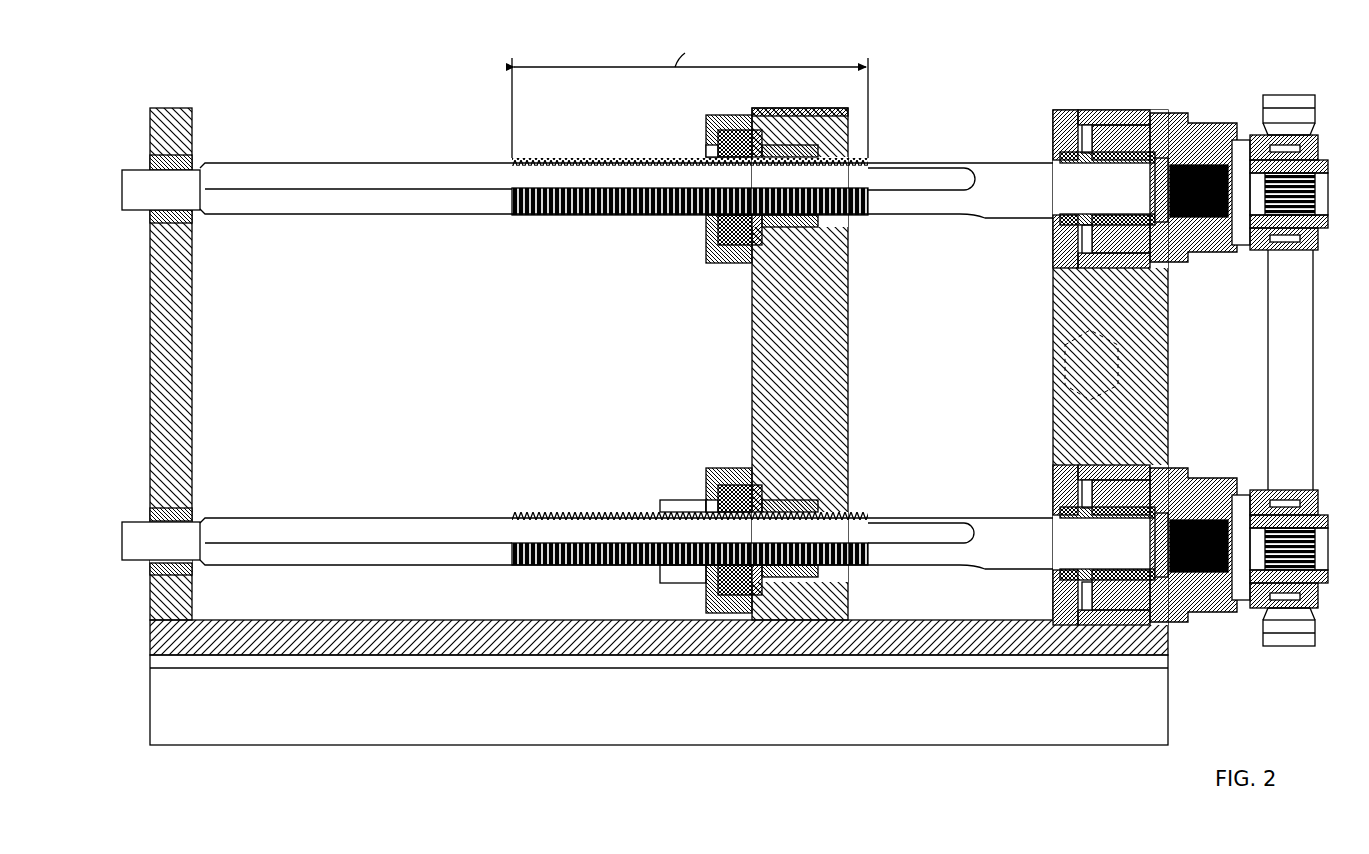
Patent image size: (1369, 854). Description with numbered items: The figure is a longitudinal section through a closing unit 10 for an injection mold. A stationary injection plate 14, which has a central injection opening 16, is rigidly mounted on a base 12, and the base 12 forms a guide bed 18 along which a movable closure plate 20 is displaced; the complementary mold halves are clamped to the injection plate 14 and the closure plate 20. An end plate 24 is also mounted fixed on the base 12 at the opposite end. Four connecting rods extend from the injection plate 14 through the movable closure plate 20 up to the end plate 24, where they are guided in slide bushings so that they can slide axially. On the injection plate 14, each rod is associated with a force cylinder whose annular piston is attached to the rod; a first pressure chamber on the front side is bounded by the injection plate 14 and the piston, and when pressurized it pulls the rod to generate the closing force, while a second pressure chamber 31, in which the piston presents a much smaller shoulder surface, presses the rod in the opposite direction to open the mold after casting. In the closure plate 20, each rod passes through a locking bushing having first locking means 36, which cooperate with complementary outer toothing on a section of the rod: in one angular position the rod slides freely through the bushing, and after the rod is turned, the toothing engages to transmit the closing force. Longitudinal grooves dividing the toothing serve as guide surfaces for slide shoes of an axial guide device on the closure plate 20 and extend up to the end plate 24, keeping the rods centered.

The closing unit 10 is at (725, 412).
The base 12 is at (659, 695).
The injection plate 14 is at (1112, 365).
The central injection opening 16 is at (1150, 352).
The guide bed 18 is at (506, 612).
The movable closure plate 20 is at (829, 348).
The end plate 24 is at (193, 331).
The second pressure chamber 31 is at (1128, 108).
The first locking means 36 is at (781, 152).